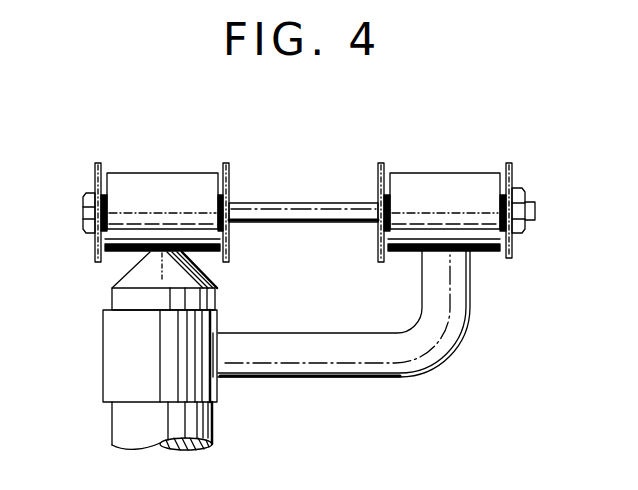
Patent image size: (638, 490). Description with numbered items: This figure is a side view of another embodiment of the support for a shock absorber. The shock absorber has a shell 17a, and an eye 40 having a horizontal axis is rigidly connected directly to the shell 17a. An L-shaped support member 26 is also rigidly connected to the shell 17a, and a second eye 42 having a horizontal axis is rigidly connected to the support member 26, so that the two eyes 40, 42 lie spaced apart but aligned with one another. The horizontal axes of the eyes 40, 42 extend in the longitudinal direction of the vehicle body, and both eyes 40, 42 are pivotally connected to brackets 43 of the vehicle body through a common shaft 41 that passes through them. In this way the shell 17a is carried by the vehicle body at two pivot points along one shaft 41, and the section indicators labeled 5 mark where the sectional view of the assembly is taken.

The eye 40 is at (169, 172).
The eye 42 is at (472, 172).
The brackets 43 is at (232, 168).
The common shaft 41 is at (290, 223).
The L-shaped support member 26 is at (420, 357).
The shell 17a is at (120, 427).
The section line 5- 5 is at (118, 132).